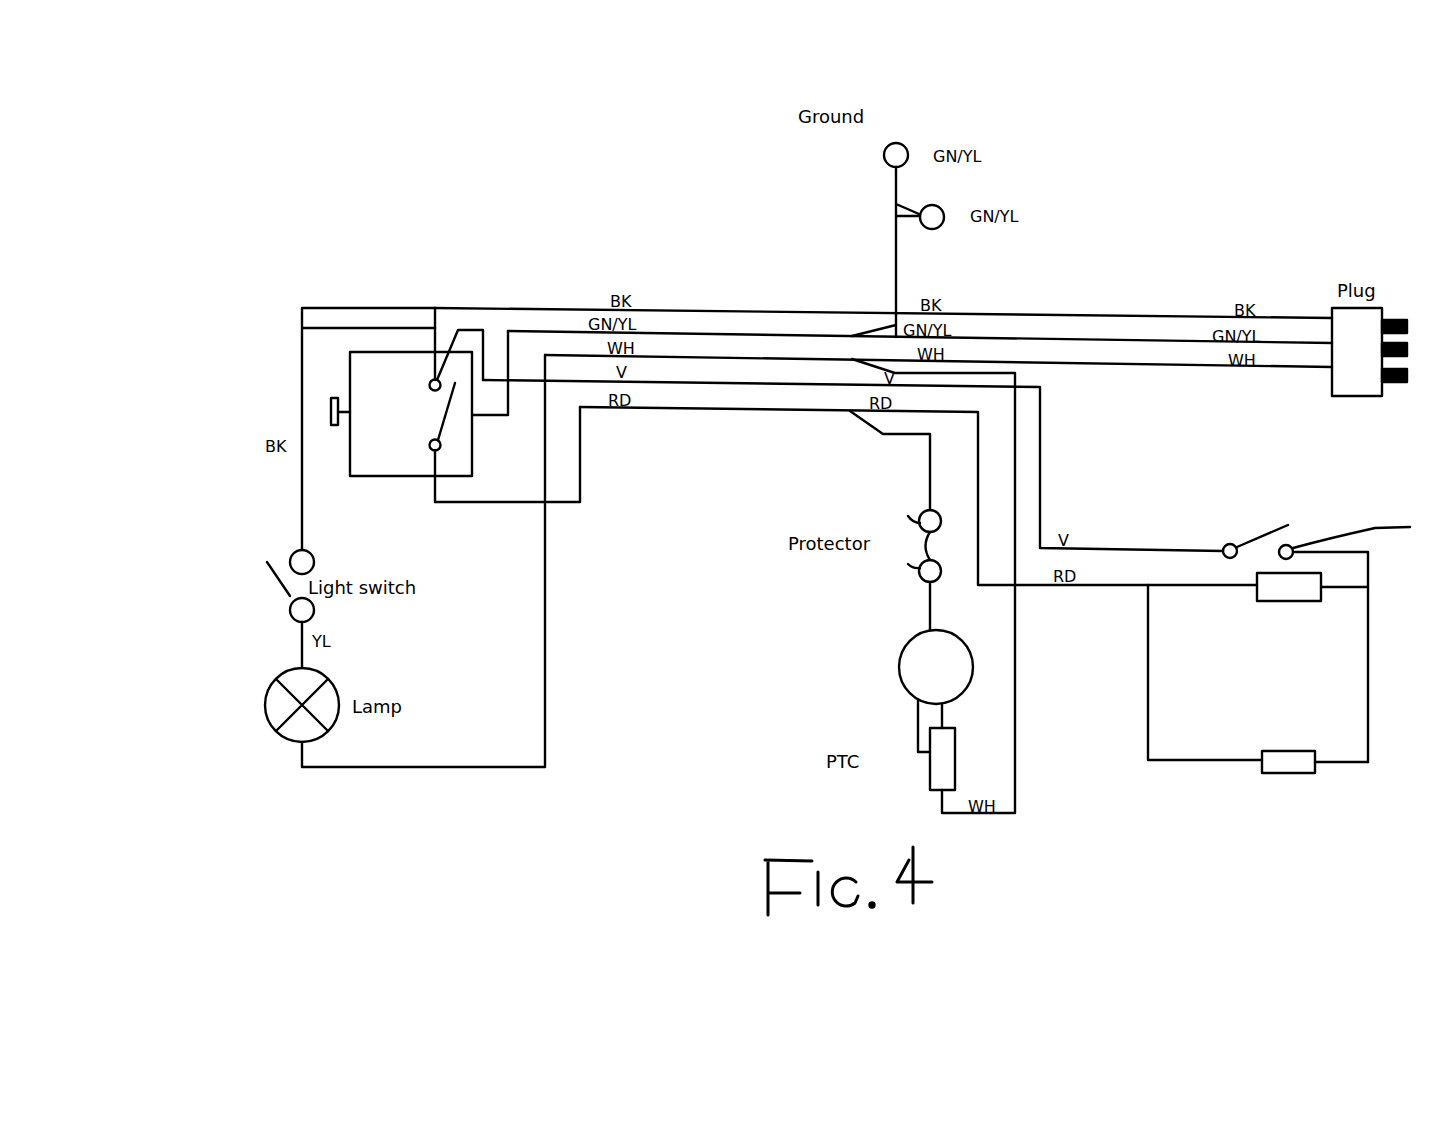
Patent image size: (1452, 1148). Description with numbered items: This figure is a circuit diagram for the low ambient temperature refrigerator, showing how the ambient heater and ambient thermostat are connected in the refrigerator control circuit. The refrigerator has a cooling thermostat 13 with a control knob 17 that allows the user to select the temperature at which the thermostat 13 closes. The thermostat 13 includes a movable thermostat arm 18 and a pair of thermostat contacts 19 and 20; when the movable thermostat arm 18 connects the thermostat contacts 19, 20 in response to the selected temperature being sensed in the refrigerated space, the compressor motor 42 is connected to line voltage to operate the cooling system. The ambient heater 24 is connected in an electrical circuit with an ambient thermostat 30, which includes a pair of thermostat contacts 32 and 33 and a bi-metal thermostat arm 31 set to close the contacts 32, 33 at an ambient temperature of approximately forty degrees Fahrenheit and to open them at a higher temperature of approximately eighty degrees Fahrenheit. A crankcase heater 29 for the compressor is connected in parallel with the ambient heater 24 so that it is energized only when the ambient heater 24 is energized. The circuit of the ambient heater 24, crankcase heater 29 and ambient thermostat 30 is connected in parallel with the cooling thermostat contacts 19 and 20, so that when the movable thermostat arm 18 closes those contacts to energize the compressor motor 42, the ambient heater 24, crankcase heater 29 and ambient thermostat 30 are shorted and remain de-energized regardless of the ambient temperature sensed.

The thermostat 13 is at (439, 428).
The control knob 17 is at (331, 398).
The movable thermostat arm 18 is at (448, 422).
The thermostat contact 19 is at (428, 441).
The thermostat contact 20 is at (427, 388).
The ambient heater 24 is at (1287, 588).
The crankcase heater 29 is at (1278, 765).
The ambient thermostat 30 is at (1298, 493).
The bi-metal thermostat arm 31 is at (1261, 530).
The thermostat contact 32 is at (1226, 546).
The thermostat contact 33 is at (1364, 537).
The compressor motor 42 is at (917, 666).